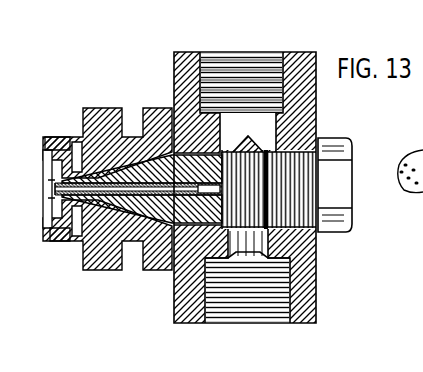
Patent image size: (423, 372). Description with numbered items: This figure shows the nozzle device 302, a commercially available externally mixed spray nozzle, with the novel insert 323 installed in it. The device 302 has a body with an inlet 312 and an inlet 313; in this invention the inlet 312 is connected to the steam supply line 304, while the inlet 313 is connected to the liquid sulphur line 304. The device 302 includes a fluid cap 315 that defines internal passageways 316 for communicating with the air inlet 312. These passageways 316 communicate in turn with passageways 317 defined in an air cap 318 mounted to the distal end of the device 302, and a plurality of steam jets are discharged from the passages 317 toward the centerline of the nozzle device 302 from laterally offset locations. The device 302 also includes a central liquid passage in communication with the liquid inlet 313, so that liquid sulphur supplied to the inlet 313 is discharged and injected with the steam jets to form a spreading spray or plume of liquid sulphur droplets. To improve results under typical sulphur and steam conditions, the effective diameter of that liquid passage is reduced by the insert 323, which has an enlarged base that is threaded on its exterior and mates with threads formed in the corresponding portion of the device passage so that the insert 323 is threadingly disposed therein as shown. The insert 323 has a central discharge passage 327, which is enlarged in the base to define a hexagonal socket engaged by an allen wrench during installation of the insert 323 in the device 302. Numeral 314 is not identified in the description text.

The nozzle device 302 is at (318, 64).
The steam supply line 304 is at (250, 340).
The inlet 312 is at (222, 42).
The inlet 313 is at (235, 345).
The threaded bore 314 is at (240, 33).
The fluid cap 315 is at (153, 262).
The internal passageways 316 is at (173, 128).
The passageways 317 is at (76, 240).
The air cap 318 is at (50, 138).
The insert 323 is at (64, 193).
The central discharge passage 327 is at (45, 185).